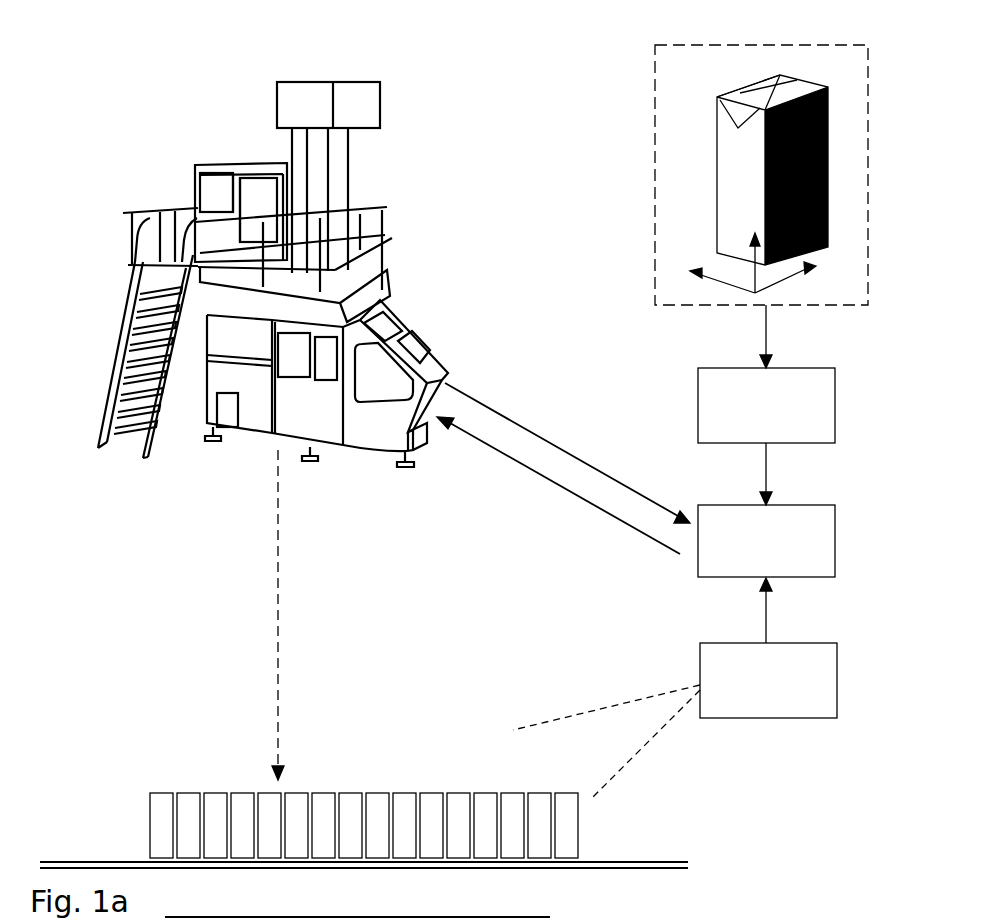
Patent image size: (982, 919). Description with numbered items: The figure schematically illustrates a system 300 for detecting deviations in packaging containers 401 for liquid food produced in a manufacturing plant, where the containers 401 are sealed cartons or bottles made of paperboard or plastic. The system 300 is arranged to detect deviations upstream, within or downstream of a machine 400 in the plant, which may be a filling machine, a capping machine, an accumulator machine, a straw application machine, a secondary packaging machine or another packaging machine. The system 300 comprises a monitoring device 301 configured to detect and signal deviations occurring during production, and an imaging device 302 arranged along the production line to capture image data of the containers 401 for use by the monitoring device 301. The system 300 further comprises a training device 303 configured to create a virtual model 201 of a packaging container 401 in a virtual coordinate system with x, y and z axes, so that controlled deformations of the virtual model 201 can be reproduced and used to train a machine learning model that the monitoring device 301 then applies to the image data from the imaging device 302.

The virtual model 201 is at (736, 83).
The system 300 is at (534, 563).
The monitoring device 301 is at (766, 541).
The imaging device 302 is at (768, 680).
The training device 303 is at (766, 405).
The machine 400 is at (466, 117).
The packaging containers 401 is at (213, 793).